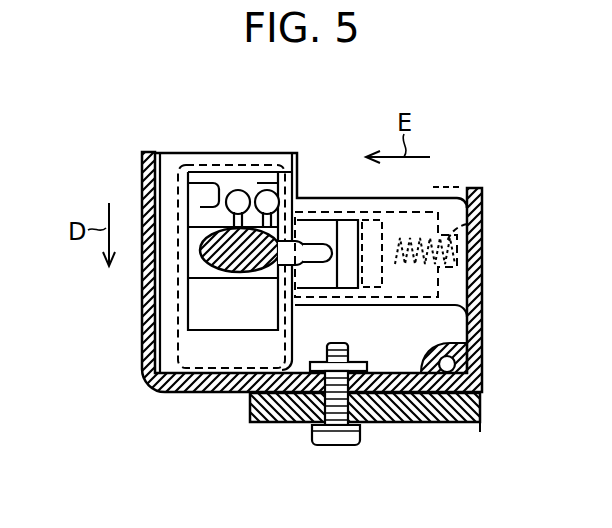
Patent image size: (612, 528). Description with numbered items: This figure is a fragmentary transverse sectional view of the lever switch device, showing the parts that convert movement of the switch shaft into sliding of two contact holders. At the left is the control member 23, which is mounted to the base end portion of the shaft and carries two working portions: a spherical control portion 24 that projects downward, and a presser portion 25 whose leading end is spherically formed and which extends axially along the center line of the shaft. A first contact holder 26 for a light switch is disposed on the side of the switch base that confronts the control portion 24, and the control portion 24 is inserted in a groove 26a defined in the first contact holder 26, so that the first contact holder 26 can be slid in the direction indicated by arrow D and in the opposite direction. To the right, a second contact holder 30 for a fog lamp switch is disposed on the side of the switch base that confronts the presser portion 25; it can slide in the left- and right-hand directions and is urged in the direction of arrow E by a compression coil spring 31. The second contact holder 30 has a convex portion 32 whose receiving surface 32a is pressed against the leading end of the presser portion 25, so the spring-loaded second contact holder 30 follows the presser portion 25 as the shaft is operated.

The control member 23 is at (204, 256).
The spherical control portion 24 is at (252, 190).
The presser portion 25 is at (348, 280).
The first contact holder 26 is at (205, 166).
The groove 26a is at (200, 206).
The second contact holder 30 is at (420, 212).
The compression coil spring 31 is at (482, 221).
The convex portion 32 is at (349, 283).
The receiving surface 32a is at (337, 234).